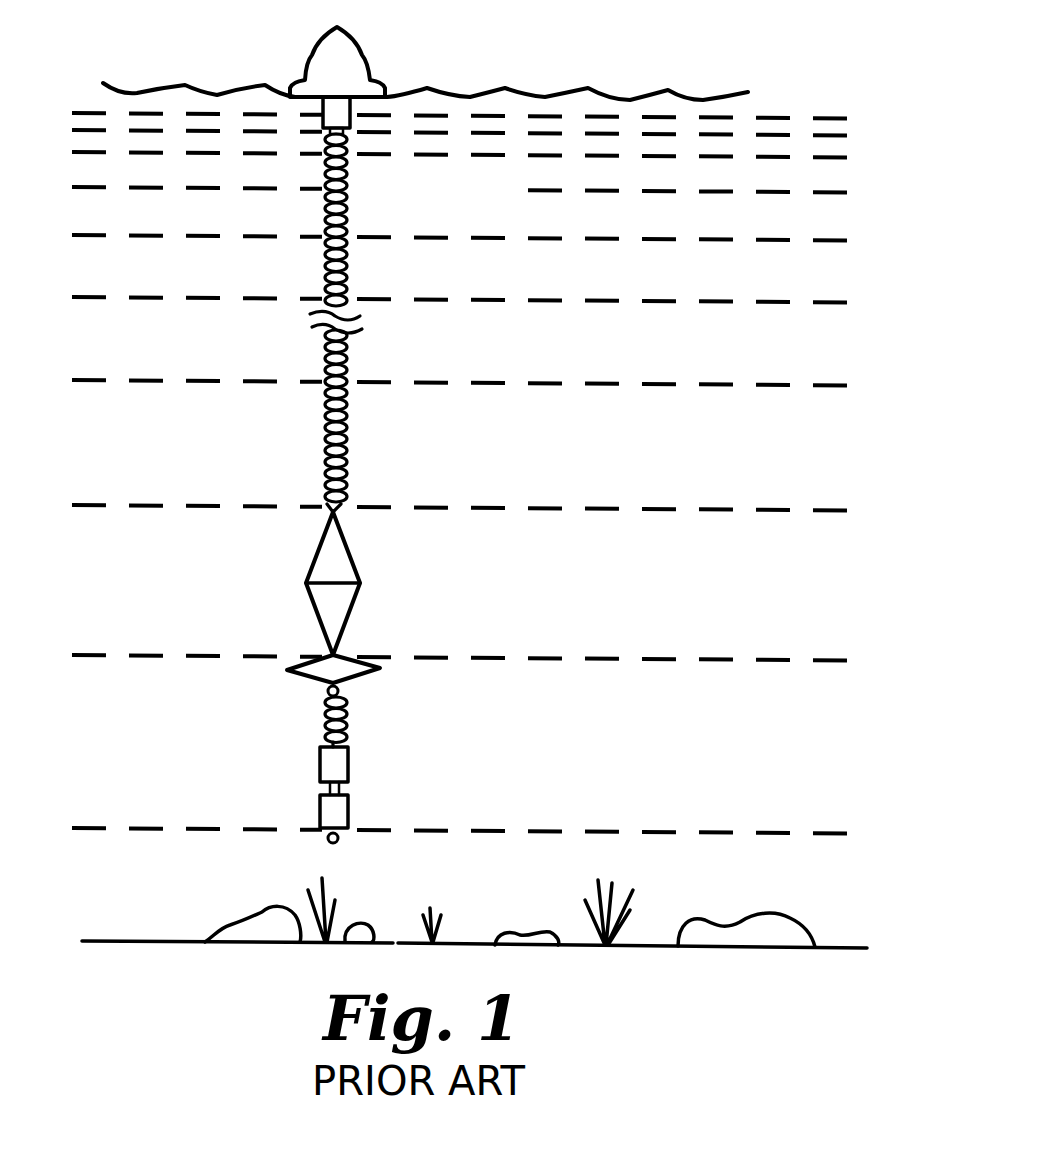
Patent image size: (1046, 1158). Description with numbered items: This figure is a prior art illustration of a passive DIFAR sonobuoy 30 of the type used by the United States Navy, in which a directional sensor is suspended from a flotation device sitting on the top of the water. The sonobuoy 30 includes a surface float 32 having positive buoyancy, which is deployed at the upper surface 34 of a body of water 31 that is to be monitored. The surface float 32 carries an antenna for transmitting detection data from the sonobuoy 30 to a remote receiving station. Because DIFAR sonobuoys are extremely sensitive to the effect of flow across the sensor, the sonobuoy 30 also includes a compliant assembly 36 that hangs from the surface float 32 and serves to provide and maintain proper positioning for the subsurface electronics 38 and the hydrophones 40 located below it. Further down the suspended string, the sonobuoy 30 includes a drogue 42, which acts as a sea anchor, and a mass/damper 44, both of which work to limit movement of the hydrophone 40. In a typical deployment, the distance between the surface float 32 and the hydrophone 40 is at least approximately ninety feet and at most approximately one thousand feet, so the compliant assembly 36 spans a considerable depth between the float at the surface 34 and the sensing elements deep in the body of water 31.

The passive DIFAR sonobuoy 30 is at (368, 216).
The body of water 31 is at (667, 105).
The surface float 32 is at (365, 52).
The upper surface 34 is at (543, 97).
The compliant assembly 36 is at (348, 370).
The subsurface electronics 38 is at (350, 758).
The hydrophones 40 is at (350, 810).
The drogue 42 is at (353, 550).
The mass/damper 44 is at (357, 657).